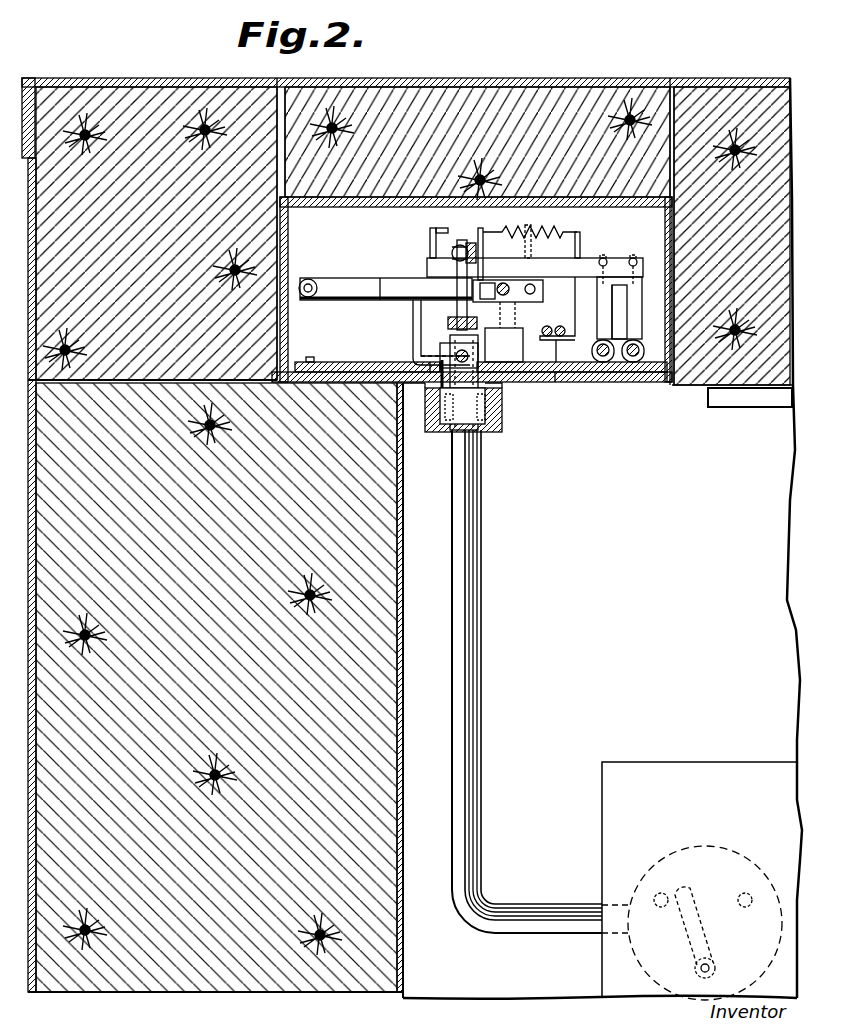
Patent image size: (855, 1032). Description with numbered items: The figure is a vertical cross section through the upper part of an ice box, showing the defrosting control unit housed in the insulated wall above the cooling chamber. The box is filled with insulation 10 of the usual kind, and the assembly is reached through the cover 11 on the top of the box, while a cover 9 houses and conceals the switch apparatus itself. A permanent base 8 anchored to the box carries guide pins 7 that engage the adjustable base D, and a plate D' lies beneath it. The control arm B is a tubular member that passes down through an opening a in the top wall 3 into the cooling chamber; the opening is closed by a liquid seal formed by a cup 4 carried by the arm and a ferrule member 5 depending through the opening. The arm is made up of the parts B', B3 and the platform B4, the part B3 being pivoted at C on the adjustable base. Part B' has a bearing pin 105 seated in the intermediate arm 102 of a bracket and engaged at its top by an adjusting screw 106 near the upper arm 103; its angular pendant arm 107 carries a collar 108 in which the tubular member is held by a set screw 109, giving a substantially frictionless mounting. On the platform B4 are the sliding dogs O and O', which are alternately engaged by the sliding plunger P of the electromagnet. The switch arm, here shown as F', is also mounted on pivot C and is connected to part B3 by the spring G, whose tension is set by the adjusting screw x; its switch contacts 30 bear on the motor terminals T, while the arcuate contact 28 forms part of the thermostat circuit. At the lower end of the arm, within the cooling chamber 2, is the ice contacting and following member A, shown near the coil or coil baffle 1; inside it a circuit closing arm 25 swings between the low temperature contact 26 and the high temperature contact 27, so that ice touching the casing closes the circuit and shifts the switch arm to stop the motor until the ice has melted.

The coil or coil baffle 1 is at (699, 880).
The rear wall 2 is at (675, 570).
The top wall 3 is at (612, 382).
The cup 4 is at (492, 432).
The ferrule member 5 is at (498, 406).
The guide pins 7 is at (653, 382).
The permanent base 8 is at (634, 384).
The cover 9 is at (288, 250).
The insulation 10 is at (222, 110).
The cover 11 is at (560, 88).
The circuit closing arm 25 is at (684, 887).
The low temperature contact 26 is at (562, 382).
The high temperature contact 27 is at (748, 893).
The arcuate contact 28 is at (564, 332).
The switch contacts 30 is at (630, 310).
The intermediate arm 102 is at (458, 352).
The upper arm 103 is at (456, 246).
The bearing pin 105 is at (450, 326).
The adjusting screw 106 is at (442, 246).
The angular pendant arm 107 is at (415, 322).
The collar 108 is at (440, 352).
The set screw 109 is at (500, 392).
The opening a is at (418, 392).
The adjusting screw x is at (310, 298).
The ice contacting and following member A is at (670, 852).
The control arm B is at (527, 681).
The arm part B' is at (386, 271).
The arm part B3 is at (382, 276).
The platform portion B4 is at (534, 292).
The pivot C is at (518, 322).
The adjustable base D is at (367, 354).
The plate D' is at (407, 355).
The frame F' is at (535, 283).
The spring G is at (558, 226).
The sliding dog O is at (477, 241).
The sliding dog O' is at (535, 230).
The sliding plunger P is at (468, 318).
The terminals T is at (634, 345).